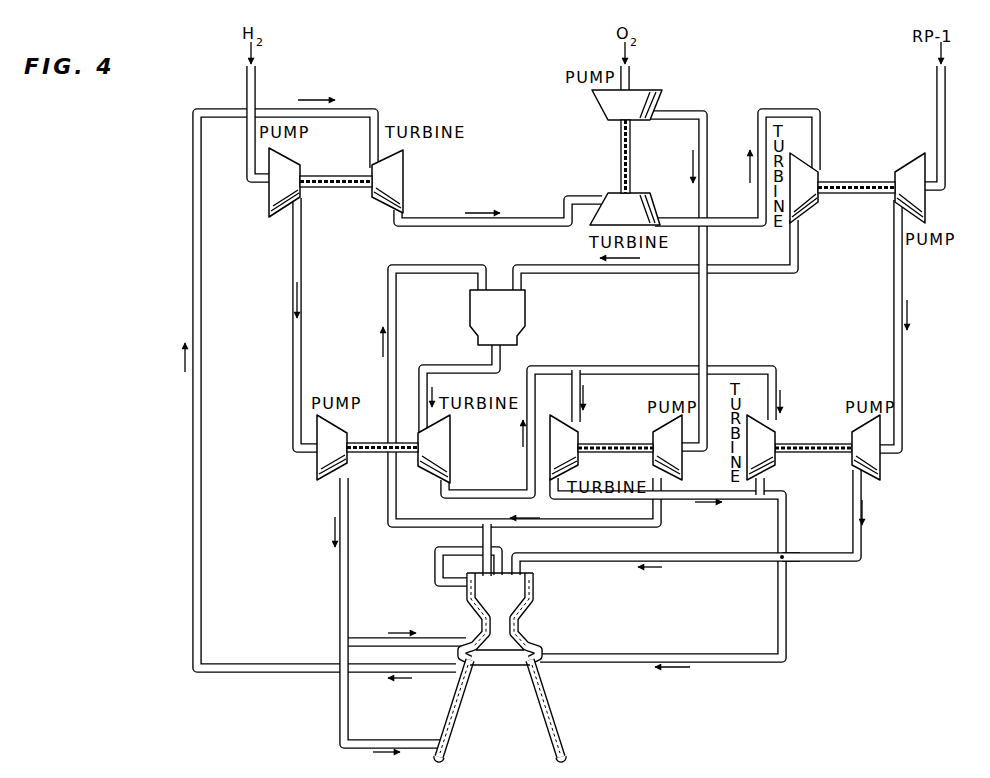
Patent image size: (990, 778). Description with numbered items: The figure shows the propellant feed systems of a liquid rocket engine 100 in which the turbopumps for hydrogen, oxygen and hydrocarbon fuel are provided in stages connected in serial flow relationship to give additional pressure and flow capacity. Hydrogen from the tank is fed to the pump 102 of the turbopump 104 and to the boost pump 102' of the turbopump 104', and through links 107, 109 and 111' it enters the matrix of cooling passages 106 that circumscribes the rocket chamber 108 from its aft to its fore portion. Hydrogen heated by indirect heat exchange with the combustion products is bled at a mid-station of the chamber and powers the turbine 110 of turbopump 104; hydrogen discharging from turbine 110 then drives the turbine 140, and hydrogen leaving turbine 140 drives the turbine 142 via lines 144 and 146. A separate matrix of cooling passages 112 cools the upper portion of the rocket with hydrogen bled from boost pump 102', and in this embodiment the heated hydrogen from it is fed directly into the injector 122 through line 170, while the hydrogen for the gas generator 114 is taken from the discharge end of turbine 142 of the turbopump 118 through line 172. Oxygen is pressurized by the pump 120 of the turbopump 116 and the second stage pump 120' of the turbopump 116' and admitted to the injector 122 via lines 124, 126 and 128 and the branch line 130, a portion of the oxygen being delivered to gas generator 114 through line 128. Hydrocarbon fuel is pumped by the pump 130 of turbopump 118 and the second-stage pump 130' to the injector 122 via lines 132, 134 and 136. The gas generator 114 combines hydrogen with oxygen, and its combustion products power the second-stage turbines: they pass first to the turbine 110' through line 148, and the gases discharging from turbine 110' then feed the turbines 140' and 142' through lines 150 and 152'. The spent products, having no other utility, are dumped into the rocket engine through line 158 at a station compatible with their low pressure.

The liquid rocket engine 100 is at (586, 729).
The pump 102 is at (296, 179).
The turbopump 104 is at (336, 154).
The matrix of cooling passages 106 is at (436, 756).
The link 107 is at (247, 140).
The rocket chamber 108 is at (534, 753).
The link 109 is at (293, 248).
The turbine 110 is at (407, 177).
The link 111' is at (375, 611).
The matrix of cooling passages 112 is at (468, 612).
The gas generator 114 is at (509, 320).
The turbopump 116 is at (598, 156).
The turbopump 118 is at (858, 170).
The pump 120 is at (609, 103).
The injector 122 is at (528, 575).
The line 124 is at (633, 80).
The line 126 is at (708, 313).
The line 128 is at (422, 282).
The pump 130 is at (724, 364).
The line 132 is at (946, 106).
The line 134 is at (903, 289).
The line 136 is at (812, 567).
The turbine 140 is at (638, 209).
The turbine 142 is at (817, 191).
The line 144 is at (510, 221).
The line 146 is at (729, 225).
The line 148 is at (471, 368).
The line 150 is at (506, 496).
The line 158 is at (788, 616).
The line 170 is at (436, 569).
The line 172 is at (798, 261).
The boost pump 102' is at (349, 445).
The turbopump 104' is at (382, 476).
The turbine 110' is at (455, 446).
The turbopump 116' is at (615, 420).
The second stage pump 120' is at (656, 446).
The pump 130' is at (886, 447).
The turbine 140' is at (588, 447).
The turbine 142' is at (782, 449).
The line 152' is at (557, 396).